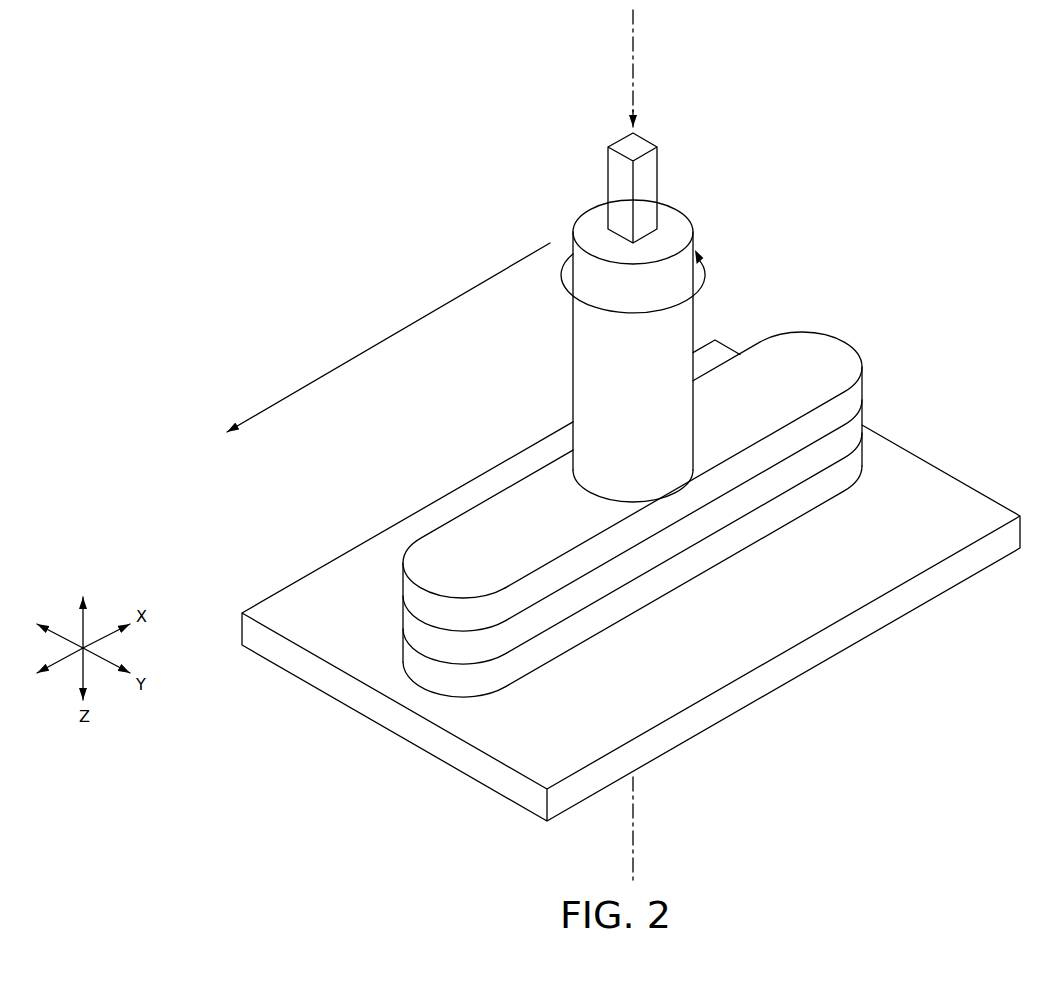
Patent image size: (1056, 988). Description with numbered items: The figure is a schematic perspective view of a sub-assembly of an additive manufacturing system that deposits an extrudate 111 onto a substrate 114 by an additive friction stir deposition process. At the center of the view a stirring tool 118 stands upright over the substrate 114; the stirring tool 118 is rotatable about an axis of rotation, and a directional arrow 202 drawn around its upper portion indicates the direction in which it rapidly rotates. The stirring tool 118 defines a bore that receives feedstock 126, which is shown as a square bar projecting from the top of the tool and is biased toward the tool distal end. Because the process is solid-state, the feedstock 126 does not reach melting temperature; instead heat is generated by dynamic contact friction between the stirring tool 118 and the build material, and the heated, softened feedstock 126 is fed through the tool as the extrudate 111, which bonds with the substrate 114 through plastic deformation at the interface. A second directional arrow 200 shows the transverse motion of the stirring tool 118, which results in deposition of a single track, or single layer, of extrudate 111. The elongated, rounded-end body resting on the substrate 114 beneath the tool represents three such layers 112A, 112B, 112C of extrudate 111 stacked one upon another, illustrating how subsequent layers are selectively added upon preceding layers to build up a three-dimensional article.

The extrudate 111 is at (838, 352).
The layer of extrudate 112A is at (859, 396).
The layer of extrudate 112B is at (859, 429).
The layer of extrudate 112C is at (859, 463).
The substrate 114 is at (985, 512).
The stirring tool 118 is at (694, 241).
The feedstock 126 is at (657, 171).
The directional arrow 200 is at (347, 361).
The directional arrow 202 is at (704, 276).